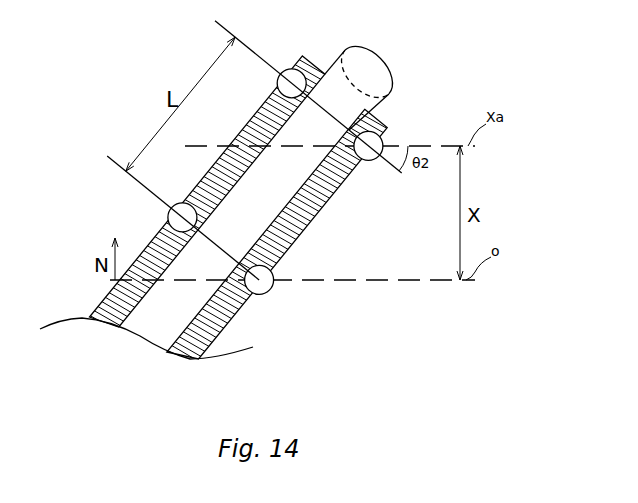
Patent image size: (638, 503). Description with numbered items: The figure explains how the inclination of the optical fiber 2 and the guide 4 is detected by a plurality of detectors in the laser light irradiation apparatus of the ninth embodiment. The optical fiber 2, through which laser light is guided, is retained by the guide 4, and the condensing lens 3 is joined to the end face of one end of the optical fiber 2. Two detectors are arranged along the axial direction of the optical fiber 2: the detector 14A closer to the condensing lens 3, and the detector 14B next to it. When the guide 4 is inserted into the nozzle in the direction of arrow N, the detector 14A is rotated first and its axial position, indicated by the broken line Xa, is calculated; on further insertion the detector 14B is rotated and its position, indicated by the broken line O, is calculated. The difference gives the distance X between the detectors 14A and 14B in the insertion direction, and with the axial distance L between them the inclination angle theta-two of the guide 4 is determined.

The optical fiber 2 is at (360, 105).
The condensing lens 3 is at (358, 70).
The guide 4 is at (316, 228).
The detector 14A is at (369, 159).
The detector 14B is at (262, 293).